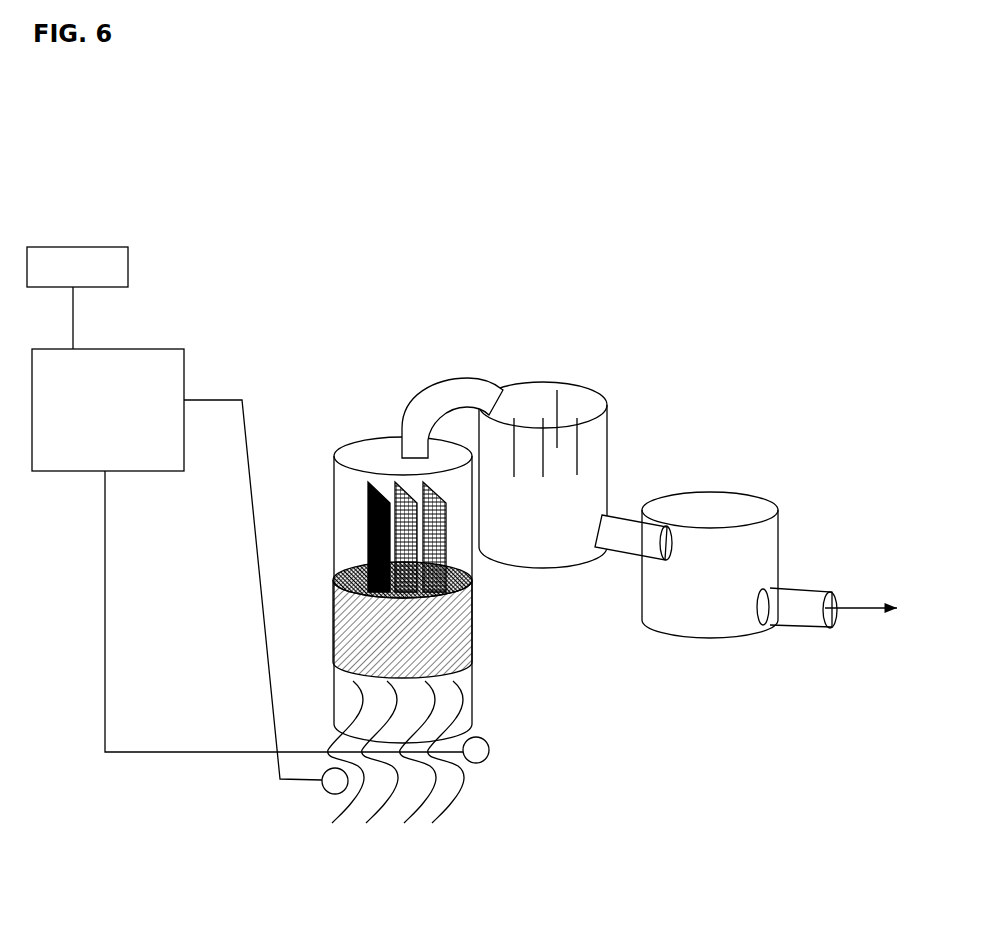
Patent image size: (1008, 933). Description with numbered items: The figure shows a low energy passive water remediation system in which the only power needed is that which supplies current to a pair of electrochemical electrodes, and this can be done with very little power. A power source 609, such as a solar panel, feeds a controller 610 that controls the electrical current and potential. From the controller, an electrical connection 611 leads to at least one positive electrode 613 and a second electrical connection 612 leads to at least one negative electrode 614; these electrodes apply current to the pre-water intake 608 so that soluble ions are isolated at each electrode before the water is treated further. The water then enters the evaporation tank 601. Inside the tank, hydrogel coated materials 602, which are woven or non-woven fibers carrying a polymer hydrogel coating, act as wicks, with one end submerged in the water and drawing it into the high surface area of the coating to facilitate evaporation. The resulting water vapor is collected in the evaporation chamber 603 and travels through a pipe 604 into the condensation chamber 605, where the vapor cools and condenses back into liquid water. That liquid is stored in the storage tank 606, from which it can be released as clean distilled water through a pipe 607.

The evaporation tank 601 is at (410, 642).
The hydrogel coated materials 602 is at (368, 527).
The evaporation chamber 603 is at (388, 447).
The pipe 604 is at (450, 390).
The condensation chamber 605 is at (538, 402).
The storage tank 606 is at (708, 503).
The pipe 607 is at (822, 598).
The pre-water intake 608 is at (408, 705).
The power source 609 is at (85, 247).
The controller 610 is at (130, 349).
The electrical connection 611 is at (211, 400).
The electrical connection 612 is at (108, 572).
The positive electrode 613 is at (320, 787).
The negative electrode 614 is at (489, 750).